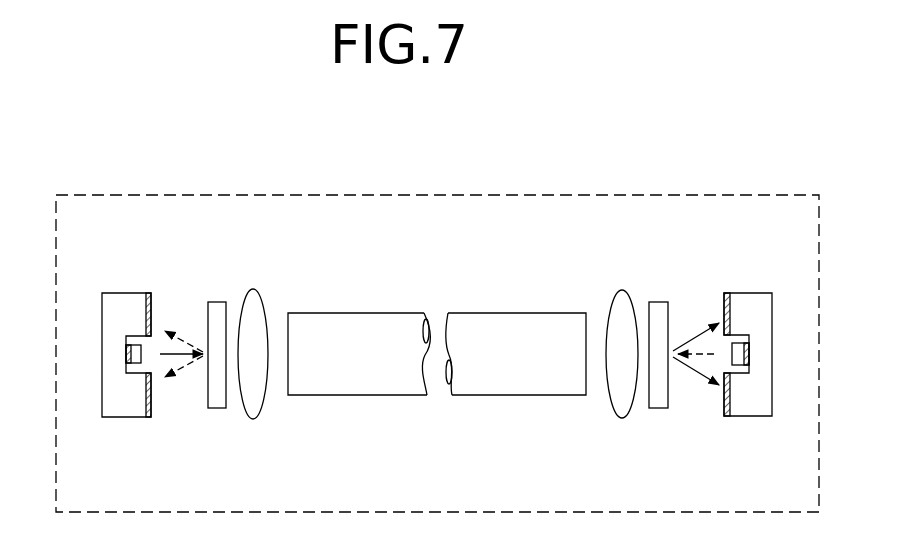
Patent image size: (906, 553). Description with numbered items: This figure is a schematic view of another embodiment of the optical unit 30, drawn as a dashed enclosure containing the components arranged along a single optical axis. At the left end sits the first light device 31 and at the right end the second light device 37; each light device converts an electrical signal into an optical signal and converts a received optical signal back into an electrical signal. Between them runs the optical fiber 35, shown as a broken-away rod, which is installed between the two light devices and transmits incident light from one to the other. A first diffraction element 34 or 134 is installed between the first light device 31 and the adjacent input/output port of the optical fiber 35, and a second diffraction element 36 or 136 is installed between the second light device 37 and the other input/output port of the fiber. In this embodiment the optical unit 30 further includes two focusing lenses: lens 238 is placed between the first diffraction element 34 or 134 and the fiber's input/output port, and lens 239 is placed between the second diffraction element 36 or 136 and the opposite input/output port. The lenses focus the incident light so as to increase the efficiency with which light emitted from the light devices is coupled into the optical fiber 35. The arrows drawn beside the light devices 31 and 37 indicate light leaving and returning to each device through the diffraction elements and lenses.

The optical unit 30 is at (675, 195).
The first light device 31 is at (114, 420).
The first diffraction element 34 is at (208, 308).
The first diffraction element 134 is at (221, 303).
The lens 238 is at (257, 299).
The optical fiber 35 is at (523, 317).
The lens 239 is at (622, 293).
The second diffraction element 36 is at (669, 307).
The second diffraction element 136 is at (662, 303).
The second light device 37 is at (762, 420).